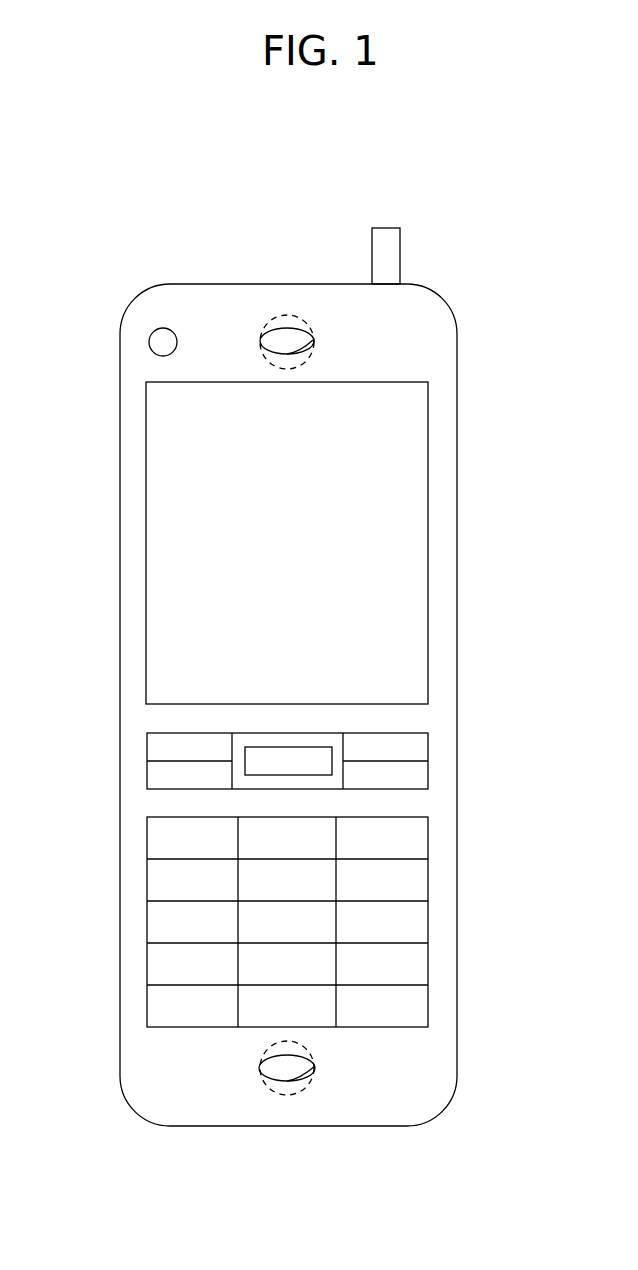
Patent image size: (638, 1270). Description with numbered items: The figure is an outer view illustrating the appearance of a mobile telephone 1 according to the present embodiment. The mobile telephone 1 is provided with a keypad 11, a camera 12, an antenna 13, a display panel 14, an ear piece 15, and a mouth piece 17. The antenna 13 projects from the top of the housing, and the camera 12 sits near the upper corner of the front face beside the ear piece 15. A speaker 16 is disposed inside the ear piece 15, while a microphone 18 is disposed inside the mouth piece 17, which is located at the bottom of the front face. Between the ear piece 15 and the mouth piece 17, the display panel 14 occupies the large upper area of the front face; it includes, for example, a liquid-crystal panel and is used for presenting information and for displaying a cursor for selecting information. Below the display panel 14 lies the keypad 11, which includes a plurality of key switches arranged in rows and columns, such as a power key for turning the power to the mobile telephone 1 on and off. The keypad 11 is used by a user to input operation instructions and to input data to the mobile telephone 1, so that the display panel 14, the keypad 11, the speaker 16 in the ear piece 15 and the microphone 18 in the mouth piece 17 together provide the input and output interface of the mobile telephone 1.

The mobile telephone 1 is at (328, 180).
The keypad 11 is at (442, 733).
The camera 12 is at (149, 342).
The antenna 13 is at (400, 252).
The display panel 14 is at (428, 505).
The ear piece 15 is at (285, 315).
The speaker 16 is at (314, 342).
The mouth piece 17 is at (287, 1095).
The microphone 18 is at (315, 1068).